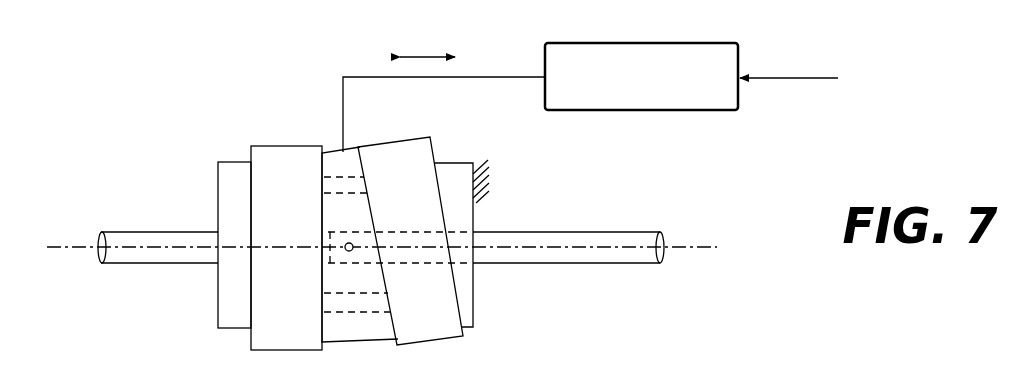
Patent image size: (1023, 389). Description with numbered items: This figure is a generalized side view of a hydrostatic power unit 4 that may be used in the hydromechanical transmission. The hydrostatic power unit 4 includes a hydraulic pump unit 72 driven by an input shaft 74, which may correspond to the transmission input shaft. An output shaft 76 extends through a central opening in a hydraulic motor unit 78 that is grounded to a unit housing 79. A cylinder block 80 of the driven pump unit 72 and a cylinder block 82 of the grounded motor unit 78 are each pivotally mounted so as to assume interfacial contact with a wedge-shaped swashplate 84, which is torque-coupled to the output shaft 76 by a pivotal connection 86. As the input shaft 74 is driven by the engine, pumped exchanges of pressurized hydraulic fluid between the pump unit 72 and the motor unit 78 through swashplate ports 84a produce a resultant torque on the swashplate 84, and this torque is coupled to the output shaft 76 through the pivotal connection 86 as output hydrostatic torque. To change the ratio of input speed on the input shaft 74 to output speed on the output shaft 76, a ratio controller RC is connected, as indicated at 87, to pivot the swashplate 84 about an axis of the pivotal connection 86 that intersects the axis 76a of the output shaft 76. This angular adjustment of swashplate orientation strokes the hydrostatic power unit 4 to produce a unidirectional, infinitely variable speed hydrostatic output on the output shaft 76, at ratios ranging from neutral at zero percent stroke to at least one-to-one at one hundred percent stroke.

The hydrostatic power unit 4 is at (228, 110).
The hydraulic pump unit 72 is at (240, 340).
The input shaft 74 is at (137, 253).
The output shaft 76 is at (588, 240).
The axis of output shaft 76a is at (677, 248).
The hydraulic motor unit 78 is at (458, 340).
The unit housing 79 is at (484, 168).
The cylinder block 80 is at (283, 309).
The cylinder block 82 is at (436, 314).
The wedge-shaped swashplate 84 is at (352, 330).
The swashplate ports 84a is at (346, 177).
The pivotal connection 86 is at (351, 243).
The connection to ratio controller 87 is at (345, 143).
The ratio controller RC is at (740, 62).